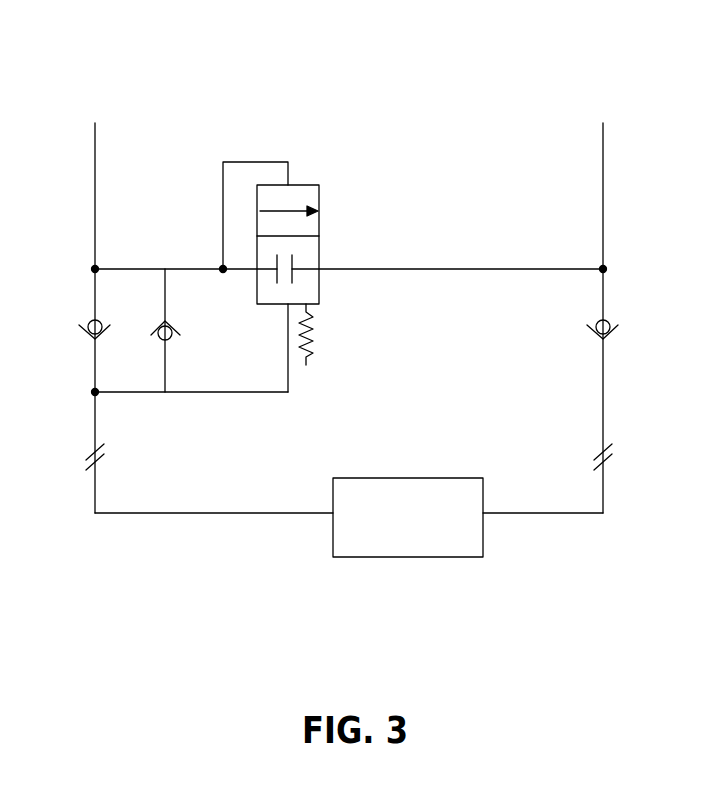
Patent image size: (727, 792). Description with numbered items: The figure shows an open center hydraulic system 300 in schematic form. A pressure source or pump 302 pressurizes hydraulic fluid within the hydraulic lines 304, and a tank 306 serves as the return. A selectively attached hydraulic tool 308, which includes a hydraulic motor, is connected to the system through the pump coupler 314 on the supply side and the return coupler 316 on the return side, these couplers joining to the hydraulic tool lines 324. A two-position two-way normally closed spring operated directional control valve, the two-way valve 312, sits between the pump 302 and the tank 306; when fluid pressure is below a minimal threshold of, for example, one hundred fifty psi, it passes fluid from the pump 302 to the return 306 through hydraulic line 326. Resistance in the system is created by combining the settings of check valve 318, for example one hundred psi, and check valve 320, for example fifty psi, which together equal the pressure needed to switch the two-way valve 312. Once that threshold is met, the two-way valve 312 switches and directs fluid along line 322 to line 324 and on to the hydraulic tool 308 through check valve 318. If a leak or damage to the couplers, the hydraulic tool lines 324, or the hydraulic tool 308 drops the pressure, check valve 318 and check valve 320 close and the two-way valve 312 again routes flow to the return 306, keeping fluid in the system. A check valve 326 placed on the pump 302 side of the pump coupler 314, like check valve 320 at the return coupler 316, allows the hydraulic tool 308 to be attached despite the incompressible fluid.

The open center hydraulic system 300 is at (560, 50).
The pressure source 302 is at (113, 81).
The hydraulic lines 304 is at (94, 208).
The tank 306 is at (618, 103).
The hydraulic tool 308 is at (333, 536).
The two-way valve 312 is at (312, 185).
The pump coupler 314 is at (81, 458).
The return coupler 316 is at (620, 444).
The check valve 318 is at (185, 323).
The check valve 320 is at (634, 312).
The line 322 is at (222, 393).
The hydraulic tool lines 324 is at (202, 514).
The check valve 326 is at (410, 269).